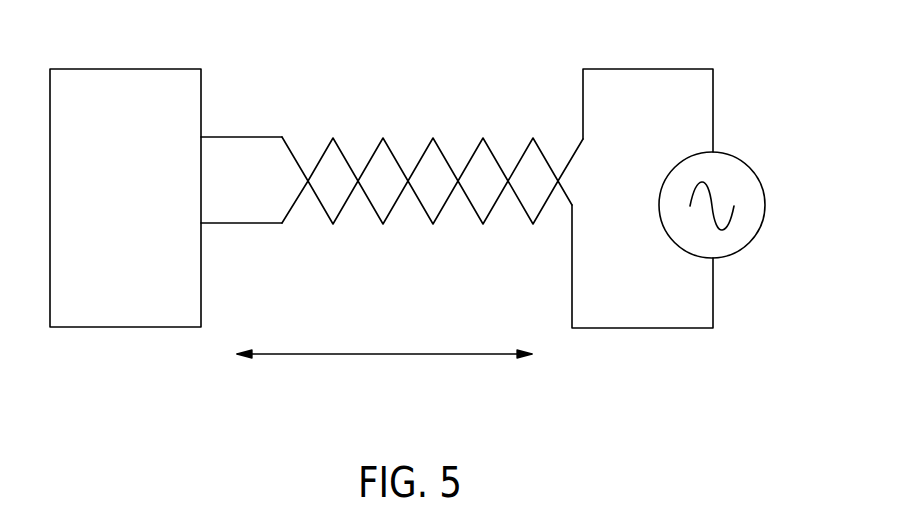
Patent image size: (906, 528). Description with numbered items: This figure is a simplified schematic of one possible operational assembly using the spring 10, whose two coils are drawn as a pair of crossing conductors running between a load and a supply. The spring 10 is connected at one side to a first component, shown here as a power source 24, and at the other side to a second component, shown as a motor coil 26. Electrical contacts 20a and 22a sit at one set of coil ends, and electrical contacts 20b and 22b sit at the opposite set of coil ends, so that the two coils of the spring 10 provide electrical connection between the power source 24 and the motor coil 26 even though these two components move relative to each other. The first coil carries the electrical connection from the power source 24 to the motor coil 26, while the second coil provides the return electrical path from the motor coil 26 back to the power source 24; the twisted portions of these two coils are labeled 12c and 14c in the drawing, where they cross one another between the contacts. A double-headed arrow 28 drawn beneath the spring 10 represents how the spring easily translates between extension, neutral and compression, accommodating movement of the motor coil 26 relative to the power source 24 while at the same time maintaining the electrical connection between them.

The spring 10 is at (420, 80).
The first wire twisted segment 12c is at (473, 155).
The second wire twisted segment 14c is at (472, 206).
The electrical contact 20a is at (282, 137).
The electrical contact 20b is at (583, 139).
The electrical contact 22a is at (282, 223).
The electrical contact 22b is at (572, 205).
The power source 24 is at (745, 165).
The motor coil 26 is at (145, 69).
The arrow 28 is at (348, 355).